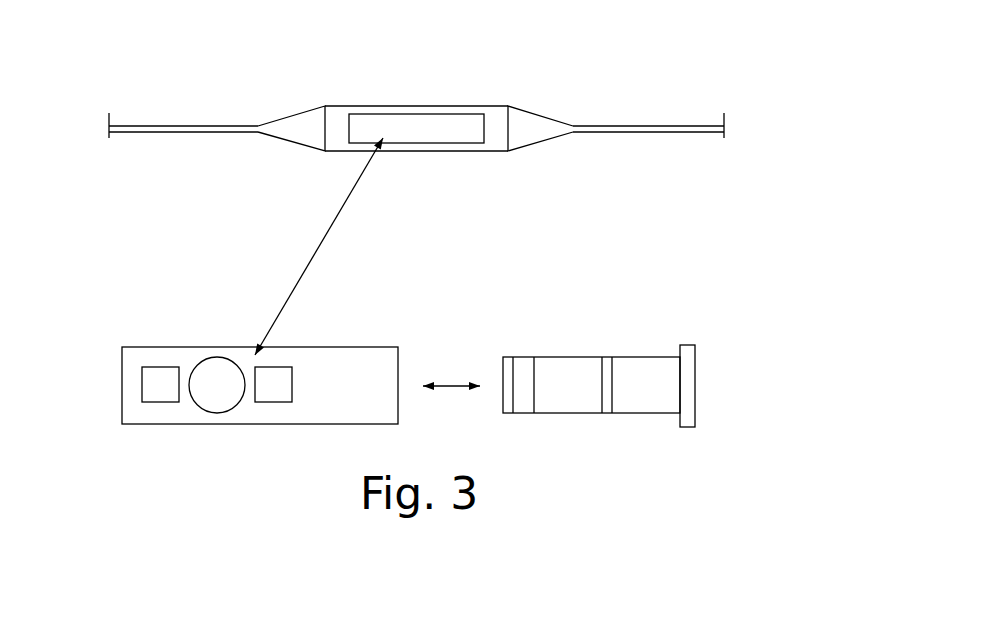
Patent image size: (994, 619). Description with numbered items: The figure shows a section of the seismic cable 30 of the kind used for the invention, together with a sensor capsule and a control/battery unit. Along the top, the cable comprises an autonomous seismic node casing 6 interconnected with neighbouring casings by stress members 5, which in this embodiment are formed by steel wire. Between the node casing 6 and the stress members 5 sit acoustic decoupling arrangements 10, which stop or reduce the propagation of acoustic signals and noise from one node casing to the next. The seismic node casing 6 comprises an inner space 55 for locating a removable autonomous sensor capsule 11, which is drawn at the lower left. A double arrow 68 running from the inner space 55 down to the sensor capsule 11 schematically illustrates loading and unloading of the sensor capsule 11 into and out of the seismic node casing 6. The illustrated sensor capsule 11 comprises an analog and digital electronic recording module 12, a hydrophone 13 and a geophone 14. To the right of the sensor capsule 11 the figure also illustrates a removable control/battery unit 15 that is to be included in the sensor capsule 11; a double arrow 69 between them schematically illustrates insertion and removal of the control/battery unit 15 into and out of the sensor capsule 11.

The stress member 5 is at (177, 118).
The seismic node casing 6 is at (337, 107).
The acoustic decoupling arrangement 10 is at (293, 107).
The sensor capsule 11 is at (372, 352).
The analog and digital electronic recording module 12 is at (160, 362).
The hydrophone 13 is at (218, 362).
The geophone 14 is at (285, 362).
The control/battery unit 15 is at (583, 334).
The seismic cable 30 is at (578, 70).
The inner space 55 is at (425, 117).
The double arrow 68 is at (319, 246).
The double arrow 69 is at (451, 370).